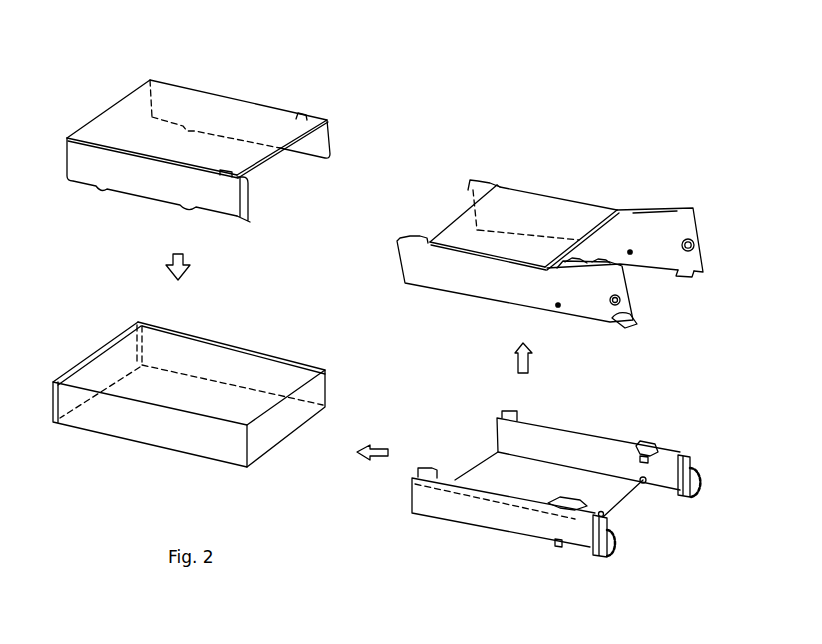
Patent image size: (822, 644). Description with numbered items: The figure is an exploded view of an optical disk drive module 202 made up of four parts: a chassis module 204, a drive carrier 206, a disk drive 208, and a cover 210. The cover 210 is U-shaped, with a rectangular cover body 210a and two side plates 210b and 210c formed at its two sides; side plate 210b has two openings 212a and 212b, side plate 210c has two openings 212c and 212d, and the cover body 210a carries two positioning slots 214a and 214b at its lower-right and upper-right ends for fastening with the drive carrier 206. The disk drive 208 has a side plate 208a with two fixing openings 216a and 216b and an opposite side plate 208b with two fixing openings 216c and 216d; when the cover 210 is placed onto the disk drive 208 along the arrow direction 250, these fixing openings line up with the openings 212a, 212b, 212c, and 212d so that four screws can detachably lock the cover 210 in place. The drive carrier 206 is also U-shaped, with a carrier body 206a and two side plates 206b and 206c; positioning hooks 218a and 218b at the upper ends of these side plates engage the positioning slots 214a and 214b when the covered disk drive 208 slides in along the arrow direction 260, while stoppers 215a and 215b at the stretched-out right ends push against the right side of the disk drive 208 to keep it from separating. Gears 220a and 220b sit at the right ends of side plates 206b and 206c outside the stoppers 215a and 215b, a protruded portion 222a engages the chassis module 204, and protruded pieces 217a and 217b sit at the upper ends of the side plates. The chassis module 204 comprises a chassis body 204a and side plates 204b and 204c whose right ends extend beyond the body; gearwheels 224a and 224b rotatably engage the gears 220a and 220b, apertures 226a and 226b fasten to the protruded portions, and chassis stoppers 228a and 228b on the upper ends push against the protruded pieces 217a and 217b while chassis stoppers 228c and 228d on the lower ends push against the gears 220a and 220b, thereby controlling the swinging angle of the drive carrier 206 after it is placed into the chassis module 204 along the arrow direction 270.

The optical disk drive module 202 is at (717, 111).
The chassis module 204 is at (580, 198).
The chassis body 204a is at (462, 225).
The side plate 204b is at (433, 277).
The side plate 204c is at (517, 168).
The drive carrier 206 is at (580, 430).
The carrier body 206a is at (487, 472).
The side plate 206b is at (450, 503).
The side plate 206c is at (537, 433).
The disk drive 208 is at (228, 342).
The side plate 208a is at (78, 420).
The side plate 208b is at (163, 340).
The cover 210 is at (236, 98).
The cover body 210a is at (116, 109).
The side plate 210b is at (72, 155).
The side plate 210c is at (322, 132).
The opening 212a is at (103, 167).
The opening 212b is at (177, 186).
The opening 212c is at (187, 108).
The opening 212d is at (260, 125).
The positioning slot 214a is at (233, 208).
The positioning slot 214b is at (302, 117).
The stopper 215a is at (610, 530).
The stopper 215b is at (690, 467).
The fixing opening 216a is at (102, 410).
The fixing opening 216b is at (175, 428).
The fixing opening 216c is at (183, 355).
The fixing opening 216d is at (257, 373).
The protruded piece 217a is at (587, 527).
The protruded piece 217b is at (683, 452).
The positioning hook 218a is at (560, 508).
The positioning hook 218b is at (653, 450).
The gear 220a is at (607, 557).
The gear 220b is at (645, 484).
The protruded portion 222a is at (558, 544).
The gearwheel 224a is at (637, 297).
The gearwheel 224b is at (700, 247).
The aperture 226a is at (558, 306).
The aperture 226b is at (631, 253).
The chassis stopper 228a is at (557, 266).
The chassis stopper 228b is at (660, 207).
The chassis stopper 228c is at (637, 317).
The chassis stopper 228d is at (703, 273).
The arrow direction 250 is at (183, 259).
The arrow direction 260 is at (369, 450).
The arrow direction 270 is at (533, 355).